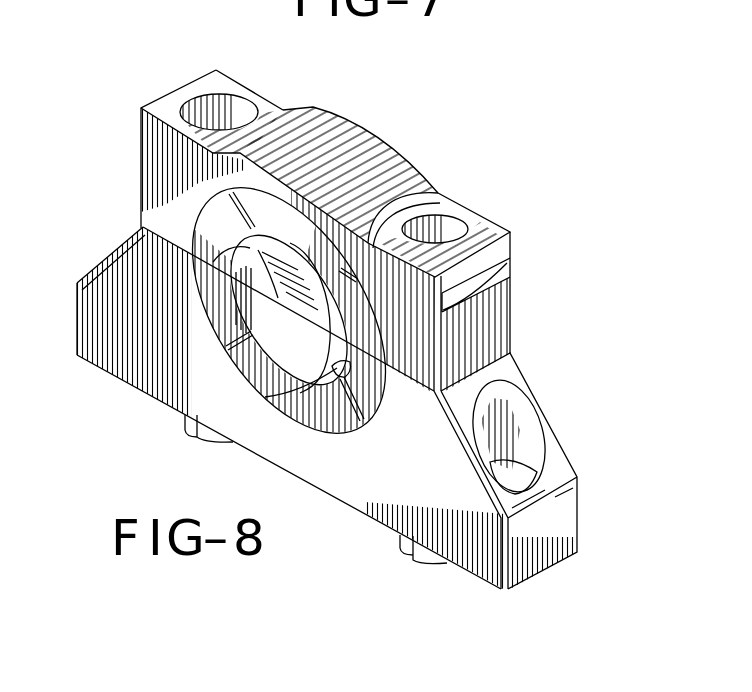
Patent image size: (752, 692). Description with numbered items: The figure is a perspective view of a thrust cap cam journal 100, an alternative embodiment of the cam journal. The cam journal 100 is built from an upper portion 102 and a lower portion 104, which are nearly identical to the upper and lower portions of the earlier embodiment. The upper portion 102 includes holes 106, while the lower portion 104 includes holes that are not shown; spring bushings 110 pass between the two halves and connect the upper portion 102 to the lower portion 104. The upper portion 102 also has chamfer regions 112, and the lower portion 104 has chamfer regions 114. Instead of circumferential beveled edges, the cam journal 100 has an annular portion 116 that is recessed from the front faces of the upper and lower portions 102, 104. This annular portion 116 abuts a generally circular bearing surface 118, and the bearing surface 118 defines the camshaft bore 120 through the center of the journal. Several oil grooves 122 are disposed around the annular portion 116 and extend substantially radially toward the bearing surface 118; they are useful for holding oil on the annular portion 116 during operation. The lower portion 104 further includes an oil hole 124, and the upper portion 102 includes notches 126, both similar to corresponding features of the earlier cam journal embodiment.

The cam journal 100 is at (70, 83).
The upper portion 102 is at (178, 157).
The lower portion 104 is at (124, 281).
The holes 106 is at (200, 108).
The spring bushings 110 is at (185, 426).
The chamfer regions 112 is at (242, 250).
The chamfer regions 114 is at (289, 309).
The annular portion 116 is at (235, 307).
The bearing surface 118 is at (262, 237).
The camshaft bore 120 is at (317, 272).
The oil grooves 122 is at (233, 345).
The oil hole 124 is at (287, 350).
The notches 126 is at (488, 277).